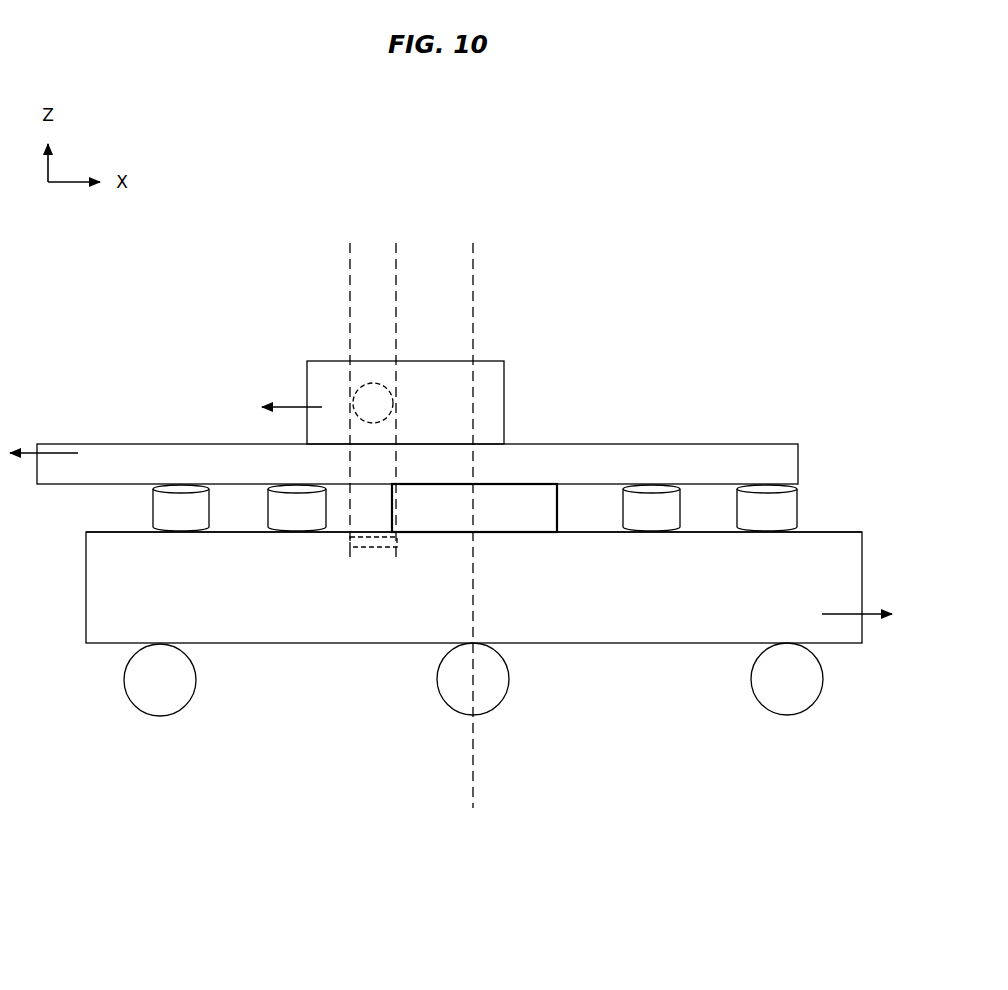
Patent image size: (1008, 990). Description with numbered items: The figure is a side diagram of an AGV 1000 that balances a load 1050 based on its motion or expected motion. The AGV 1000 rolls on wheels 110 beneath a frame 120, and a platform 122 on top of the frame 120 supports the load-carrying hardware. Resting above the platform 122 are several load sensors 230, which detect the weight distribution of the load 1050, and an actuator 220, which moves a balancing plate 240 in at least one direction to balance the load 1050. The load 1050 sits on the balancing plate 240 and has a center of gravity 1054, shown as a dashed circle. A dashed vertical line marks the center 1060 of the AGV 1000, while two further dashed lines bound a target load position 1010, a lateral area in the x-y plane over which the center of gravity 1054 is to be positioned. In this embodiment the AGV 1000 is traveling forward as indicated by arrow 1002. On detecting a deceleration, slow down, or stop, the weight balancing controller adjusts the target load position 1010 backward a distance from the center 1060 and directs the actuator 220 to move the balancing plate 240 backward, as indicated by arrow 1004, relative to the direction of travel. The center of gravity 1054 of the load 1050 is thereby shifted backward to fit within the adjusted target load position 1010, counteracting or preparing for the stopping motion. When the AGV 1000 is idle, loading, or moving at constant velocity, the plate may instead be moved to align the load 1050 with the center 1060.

The AGV 1000 is at (300, 214).
The center of the AGV 1060 is at (475, 270).
The load 1050 is at (316, 361).
The center of gravity 1054 is at (385, 403).
The arrow 1004 is at (50, 444).
The balancing plate 240 is at (793, 475).
The load sensors 230 is at (164, 520).
The actuator 220 is at (510, 525).
The target load position 1010 is at (372, 548).
The frame 120 is at (843, 582).
The platform 122 is at (857, 532).
The arrow 1002 is at (830, 614).
The wheels 110 is at (193, 700).